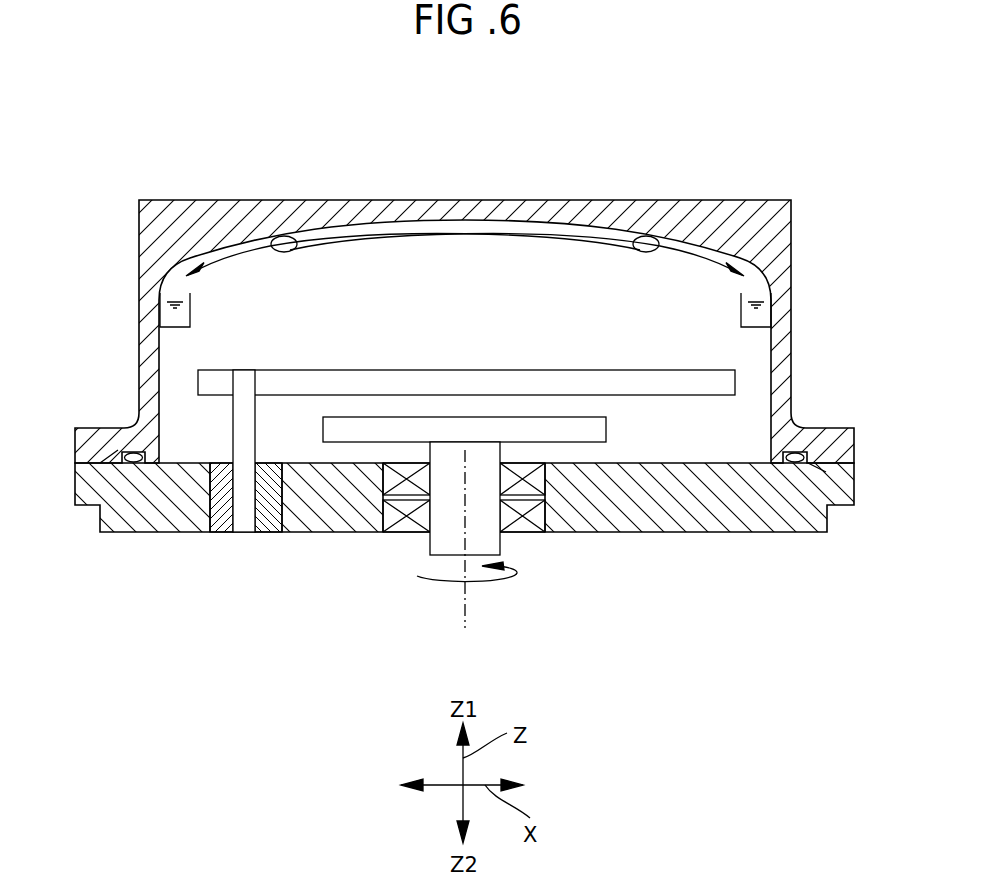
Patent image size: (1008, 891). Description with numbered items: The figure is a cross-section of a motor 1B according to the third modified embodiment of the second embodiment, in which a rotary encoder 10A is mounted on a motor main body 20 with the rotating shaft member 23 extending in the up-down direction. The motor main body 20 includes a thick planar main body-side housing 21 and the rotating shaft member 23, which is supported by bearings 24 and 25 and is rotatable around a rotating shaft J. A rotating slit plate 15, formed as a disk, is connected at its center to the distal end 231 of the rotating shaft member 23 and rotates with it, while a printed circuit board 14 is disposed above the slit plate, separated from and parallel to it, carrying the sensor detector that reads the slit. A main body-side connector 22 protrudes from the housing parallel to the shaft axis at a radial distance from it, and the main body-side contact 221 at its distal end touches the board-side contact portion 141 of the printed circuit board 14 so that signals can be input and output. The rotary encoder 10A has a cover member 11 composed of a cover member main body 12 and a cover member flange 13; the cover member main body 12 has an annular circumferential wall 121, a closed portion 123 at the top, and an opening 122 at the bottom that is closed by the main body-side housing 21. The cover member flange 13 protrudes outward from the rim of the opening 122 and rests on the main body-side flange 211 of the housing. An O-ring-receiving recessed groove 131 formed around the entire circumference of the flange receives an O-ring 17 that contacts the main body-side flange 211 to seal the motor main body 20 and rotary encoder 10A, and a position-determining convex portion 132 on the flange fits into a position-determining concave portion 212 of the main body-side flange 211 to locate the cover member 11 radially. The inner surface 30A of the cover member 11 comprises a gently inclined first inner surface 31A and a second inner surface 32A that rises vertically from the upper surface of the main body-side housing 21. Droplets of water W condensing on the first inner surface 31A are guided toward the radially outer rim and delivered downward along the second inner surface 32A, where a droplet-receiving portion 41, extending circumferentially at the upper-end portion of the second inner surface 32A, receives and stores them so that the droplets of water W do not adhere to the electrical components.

The motor 1B is at (814, 135).
The rotary encoder 10A is at (802, 255).
The cover member 11 is at (50, 367).
The cover member main body 12 is at (139, 372).
The cover member flange 13 is at (106, 428).
The inner surface 30A is at (466, 241).
The first inner surface 31A is at (478, 230).
The second inner surface 32A is at (163, 357).
The closed portion 123 is at (452, 212).
The circumferential wall 121 is at (805, 391).
The O-ring-receiving recessed groove 131 is at (118, 467).
The position-determining convex portion 132 is at (110, 463).
The droplet of water W is at (283, 237).
The droplet-receiving portion 41 is at (165, 333).
The motor main body 20 is at (804, 548).
The main body-side housing 21 is at (585, 525).
The main body-side flange 211 is at (80, 493).
The position-determining concave portion 212 is at (115, 460).
The opening 122 is at (770, 463).
The O-ring 17 is at (143, 465).
The main body-side connector 22 is at (218, 508).
The main body-side contact 221 is at (262, 398).
The printed circuit board 14 is at (680, 395).
The board-side contact portion 141 is at (250, 400).
The rotating slit plate 15 is at (605, 435).
The bearing 24 is at (384, 522).
The bearing 25 is at (385, 508).
The rotating shaft member 23 is at (433, 541).
The distal end 231 is at (546, 455).
The rotating shaft J is at (465, 615).